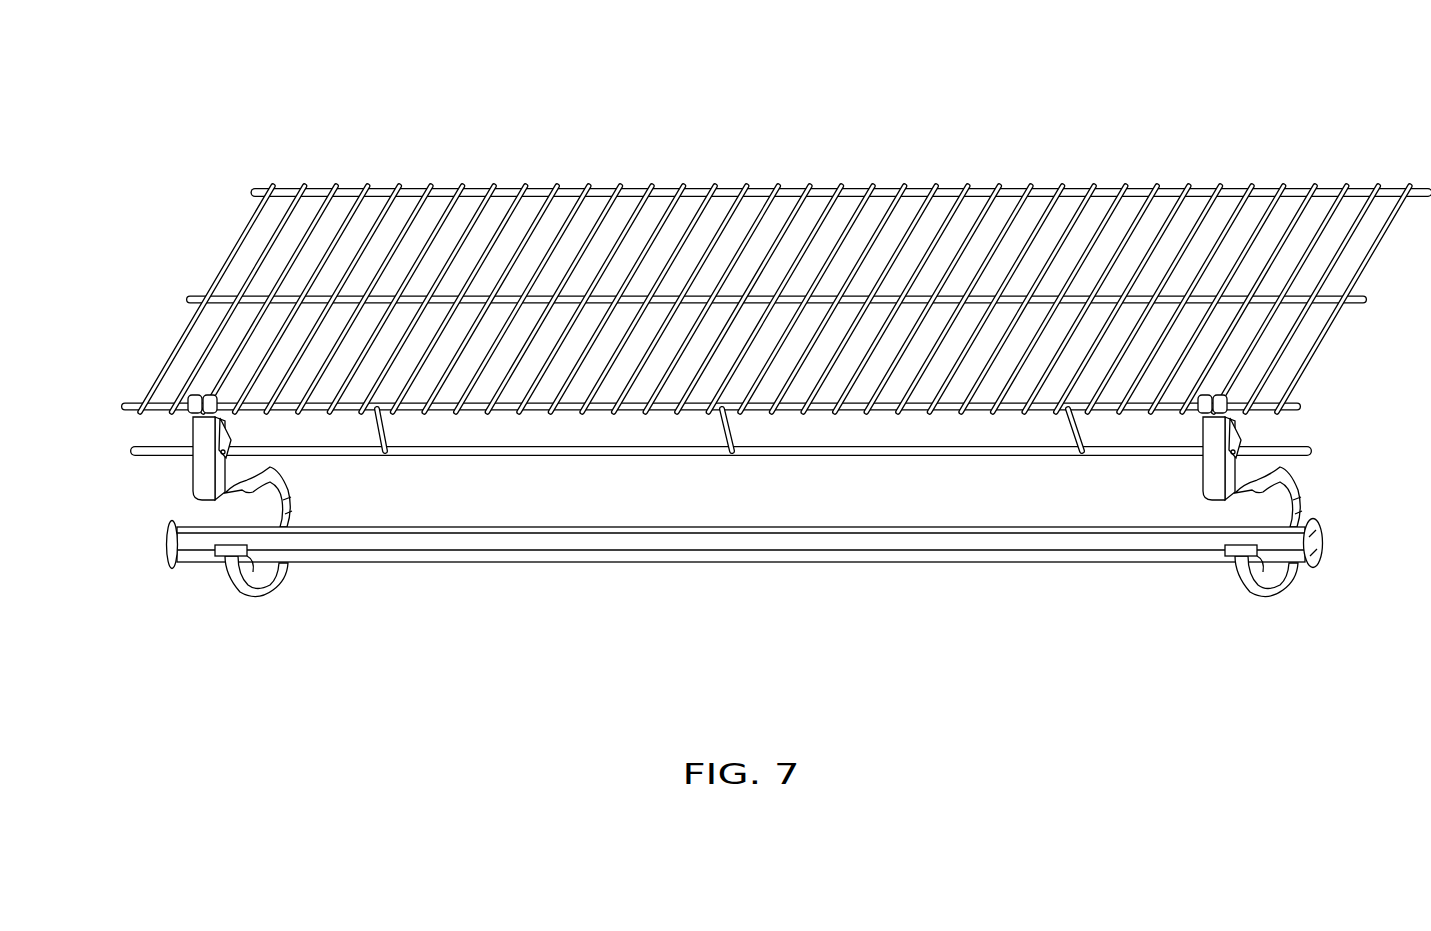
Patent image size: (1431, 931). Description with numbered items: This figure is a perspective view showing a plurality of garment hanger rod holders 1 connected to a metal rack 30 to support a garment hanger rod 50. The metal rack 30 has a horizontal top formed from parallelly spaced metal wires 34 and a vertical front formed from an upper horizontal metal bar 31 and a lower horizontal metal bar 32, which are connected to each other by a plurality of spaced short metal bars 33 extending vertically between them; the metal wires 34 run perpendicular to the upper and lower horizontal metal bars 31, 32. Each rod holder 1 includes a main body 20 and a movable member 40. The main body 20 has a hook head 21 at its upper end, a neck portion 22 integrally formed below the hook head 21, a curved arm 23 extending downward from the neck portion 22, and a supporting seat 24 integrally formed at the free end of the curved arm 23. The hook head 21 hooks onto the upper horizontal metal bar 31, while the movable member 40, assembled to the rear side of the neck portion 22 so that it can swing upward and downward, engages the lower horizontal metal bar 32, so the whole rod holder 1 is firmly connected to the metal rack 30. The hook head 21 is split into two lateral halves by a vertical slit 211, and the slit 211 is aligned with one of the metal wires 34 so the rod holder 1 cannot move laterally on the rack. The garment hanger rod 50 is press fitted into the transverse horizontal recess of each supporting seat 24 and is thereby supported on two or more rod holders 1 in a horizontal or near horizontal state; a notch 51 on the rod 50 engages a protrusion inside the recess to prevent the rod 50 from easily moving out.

The garment hanger rod holder 1 is at (748, 480).
The main body 20 is at (190, 478).
The hook head 21 is at (190, 398).
The vertical slit 211 is at (207, 396).
The neck portion 22 is at (212, 448).
The curved arm 23 is at (283, 497).
The supporting seat 24 is at (290, 588).
The metal rack 30 is at (776, 283).
The upper horizontal metal bar 31 is at (1010, 409).
The lower horizontal metal bar 32 is at (855, 457).
The short metal bars 33 is at (723, 437).
The metal wires 34 is at (1330, 217).
The movable member 40 is at (226, 447).
The garment hanger rod 50 is at (745, 593).
The notch 51 is at (583, 549).